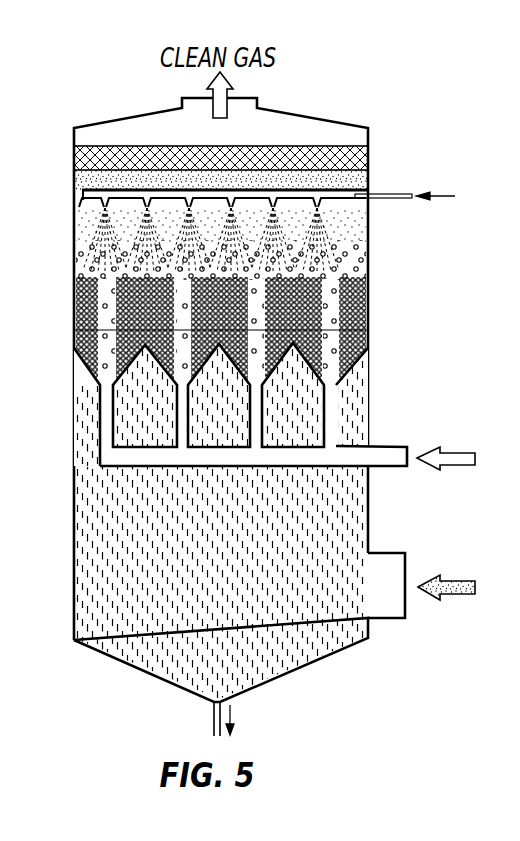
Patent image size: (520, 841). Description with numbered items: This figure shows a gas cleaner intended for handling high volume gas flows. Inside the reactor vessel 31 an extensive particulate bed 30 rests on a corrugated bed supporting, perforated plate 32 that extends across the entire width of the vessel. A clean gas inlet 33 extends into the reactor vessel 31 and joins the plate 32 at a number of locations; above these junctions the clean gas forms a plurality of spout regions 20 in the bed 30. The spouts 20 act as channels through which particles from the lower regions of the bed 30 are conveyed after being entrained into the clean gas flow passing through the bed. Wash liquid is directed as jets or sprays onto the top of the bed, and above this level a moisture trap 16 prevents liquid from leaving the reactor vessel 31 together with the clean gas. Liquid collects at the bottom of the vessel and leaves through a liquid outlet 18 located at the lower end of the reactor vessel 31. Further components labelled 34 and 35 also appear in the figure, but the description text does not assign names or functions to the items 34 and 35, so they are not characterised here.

The moisture trap 16 is at (366, 157).
The liquid outlet 18 is at (212, 718).
The spout regions 20 is at (100, 333).
The particulate bed 30 is at (74, 303).
The reactor vessel 31 is at (73, 457).
The corrugated bed supporting perforated plate 32 is at (73, 361).
The clean gas inlet 33 is at (384, 446).
The dirty gas inlet 34 is at (384, 553).
The liquid distributor 35 is at (85, 189).